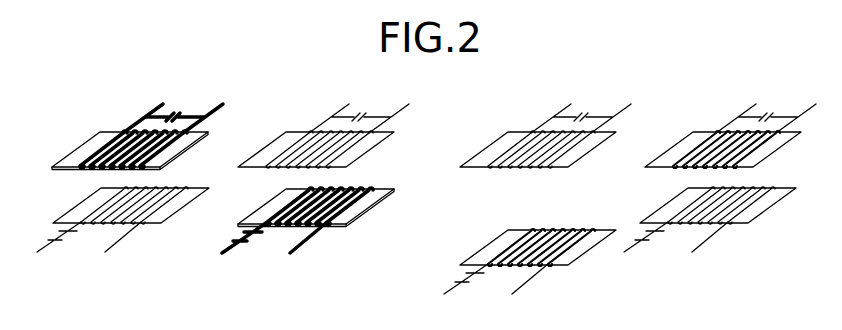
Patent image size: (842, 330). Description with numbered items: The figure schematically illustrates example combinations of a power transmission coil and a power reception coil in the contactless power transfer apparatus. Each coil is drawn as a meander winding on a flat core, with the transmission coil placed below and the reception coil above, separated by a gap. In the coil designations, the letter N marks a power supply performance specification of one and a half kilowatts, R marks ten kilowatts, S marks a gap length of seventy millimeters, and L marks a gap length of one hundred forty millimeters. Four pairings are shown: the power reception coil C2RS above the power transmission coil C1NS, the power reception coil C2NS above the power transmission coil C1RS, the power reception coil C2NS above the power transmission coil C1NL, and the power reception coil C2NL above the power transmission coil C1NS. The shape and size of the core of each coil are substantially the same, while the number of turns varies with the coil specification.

The power reception coil C2RS is at (137, 125).
The power transmission coil C1NS is at (416, 232).
The power reception coil C2NS is at (434, 124).
The power transmission coil C1RS is at (308, 232).
The power transmission coil C1NL is at (530, 271).
The power reception coil C2NL is at (730, 124).